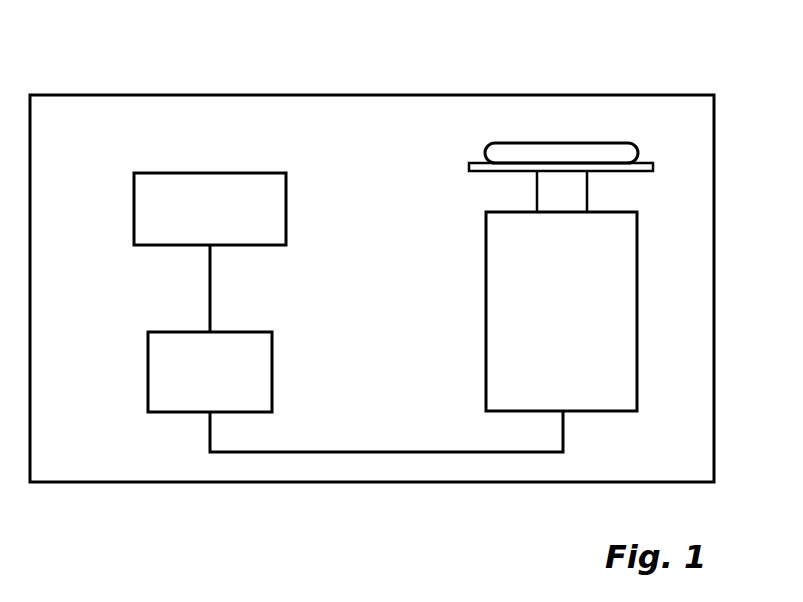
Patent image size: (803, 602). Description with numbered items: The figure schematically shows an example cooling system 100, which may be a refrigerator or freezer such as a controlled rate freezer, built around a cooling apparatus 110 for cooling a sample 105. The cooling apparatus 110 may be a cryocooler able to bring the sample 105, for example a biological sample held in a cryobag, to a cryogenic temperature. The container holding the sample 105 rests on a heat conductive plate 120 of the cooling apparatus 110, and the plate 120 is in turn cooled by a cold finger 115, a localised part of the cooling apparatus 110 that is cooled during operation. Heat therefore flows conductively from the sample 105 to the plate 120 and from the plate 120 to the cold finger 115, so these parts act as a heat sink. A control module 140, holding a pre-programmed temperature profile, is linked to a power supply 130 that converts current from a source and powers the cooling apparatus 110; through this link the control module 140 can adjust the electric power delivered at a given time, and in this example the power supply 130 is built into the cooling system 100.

The cooling system 100 is at (372, 95).
The sample 105 is at (487, 157).
The cooling apparatus 110 is at (436, 375).
The cold finger 115 is at (587, 190).
The heat conductive plate 120 is at (469, 168).
The power supply 130 is at (148, 372).
The control module 140 is at (134, 210).